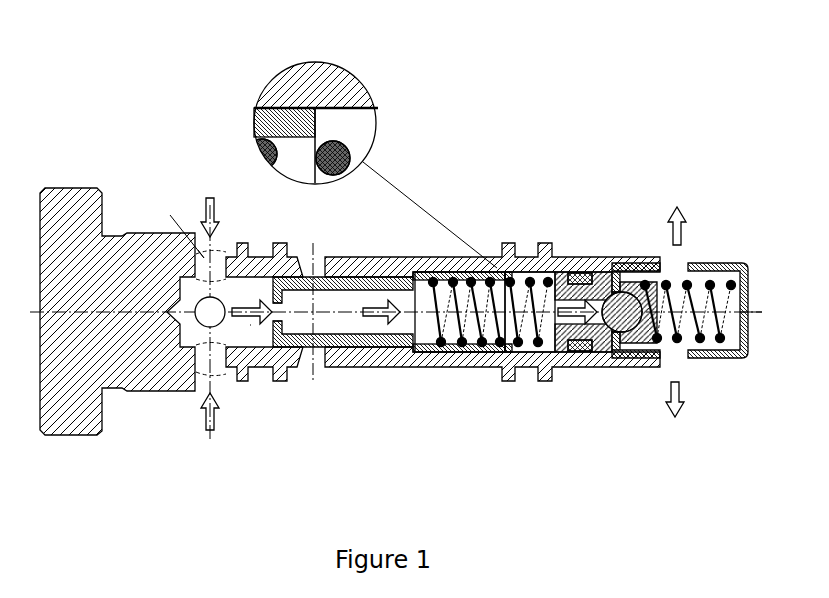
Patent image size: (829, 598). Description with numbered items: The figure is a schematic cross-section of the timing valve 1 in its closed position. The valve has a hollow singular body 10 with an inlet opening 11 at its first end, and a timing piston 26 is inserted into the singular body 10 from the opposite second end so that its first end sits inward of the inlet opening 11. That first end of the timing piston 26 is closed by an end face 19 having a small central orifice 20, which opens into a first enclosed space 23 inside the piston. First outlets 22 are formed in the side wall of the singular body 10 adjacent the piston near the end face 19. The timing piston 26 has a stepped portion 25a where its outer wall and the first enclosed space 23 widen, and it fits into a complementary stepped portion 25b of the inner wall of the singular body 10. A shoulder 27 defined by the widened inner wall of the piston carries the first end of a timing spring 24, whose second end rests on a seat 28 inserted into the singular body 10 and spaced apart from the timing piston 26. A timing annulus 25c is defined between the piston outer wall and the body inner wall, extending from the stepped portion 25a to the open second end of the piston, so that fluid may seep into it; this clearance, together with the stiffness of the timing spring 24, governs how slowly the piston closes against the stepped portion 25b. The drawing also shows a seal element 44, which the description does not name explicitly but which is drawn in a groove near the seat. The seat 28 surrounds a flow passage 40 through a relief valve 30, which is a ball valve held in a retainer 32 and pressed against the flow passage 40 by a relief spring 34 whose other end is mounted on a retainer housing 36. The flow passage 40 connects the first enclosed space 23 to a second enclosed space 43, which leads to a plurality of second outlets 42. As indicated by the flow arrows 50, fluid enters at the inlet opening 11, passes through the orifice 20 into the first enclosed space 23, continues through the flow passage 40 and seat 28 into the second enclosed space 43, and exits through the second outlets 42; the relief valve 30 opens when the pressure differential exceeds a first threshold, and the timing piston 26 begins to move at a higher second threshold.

The timing valve 1 is at (349, 37).
The singular body 10 is at (210, 246).
The inlet opening 11 is at (188, 261).
The end face 19 is at (275, 372).
The orifice 20 is at (268, 236).
The first outlets 22 is at (328, 331).
The first enclosed space 23 is at (292, 260).
The timing spring 24 is at (378, 268).
The stepped portion of the timing piston 25a is at (453, 292).
The stepped portion of the inner wall of the singular body 25b is at (343, 282).
The timing annulus 25c is at (436, 212).
The timing piston 26 is at (428, 244).
The shoulder 27 is at (460, 346).
The seat 28 is at (530, 276).
The relief valve 30 is at (618, 271).
The retainer 32 is at (622, 266).
The relief spring 34 is at (680, 279).
The retainer housing 36 is at (770, 282).
The flow passage 40 is at (583, 345).
The second outlets 42 is at (688, 344).
The second enclosed space 43 is at (727, 354).
The seal 44 is at (600, 344).
The flow arrows 50 is at (677, 454).